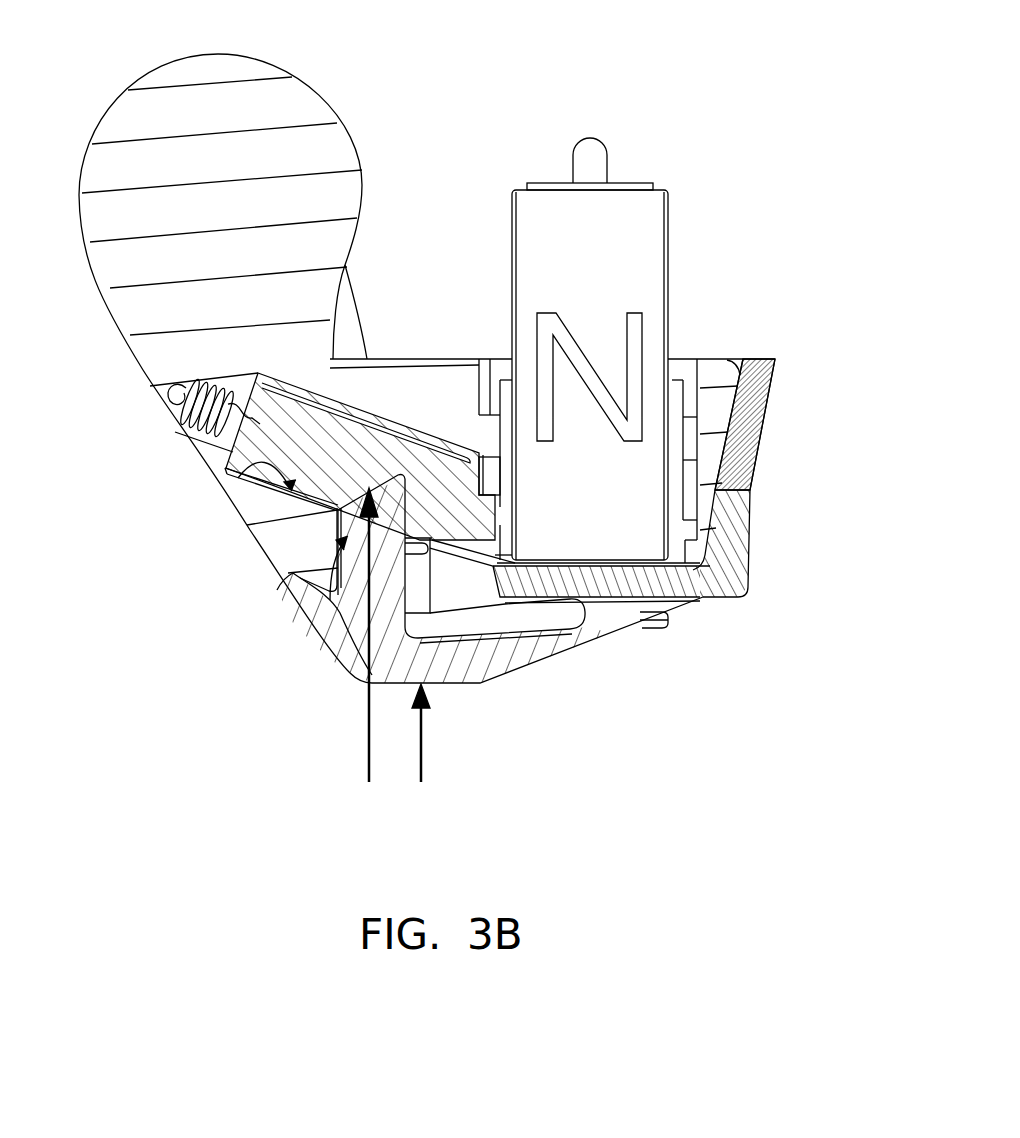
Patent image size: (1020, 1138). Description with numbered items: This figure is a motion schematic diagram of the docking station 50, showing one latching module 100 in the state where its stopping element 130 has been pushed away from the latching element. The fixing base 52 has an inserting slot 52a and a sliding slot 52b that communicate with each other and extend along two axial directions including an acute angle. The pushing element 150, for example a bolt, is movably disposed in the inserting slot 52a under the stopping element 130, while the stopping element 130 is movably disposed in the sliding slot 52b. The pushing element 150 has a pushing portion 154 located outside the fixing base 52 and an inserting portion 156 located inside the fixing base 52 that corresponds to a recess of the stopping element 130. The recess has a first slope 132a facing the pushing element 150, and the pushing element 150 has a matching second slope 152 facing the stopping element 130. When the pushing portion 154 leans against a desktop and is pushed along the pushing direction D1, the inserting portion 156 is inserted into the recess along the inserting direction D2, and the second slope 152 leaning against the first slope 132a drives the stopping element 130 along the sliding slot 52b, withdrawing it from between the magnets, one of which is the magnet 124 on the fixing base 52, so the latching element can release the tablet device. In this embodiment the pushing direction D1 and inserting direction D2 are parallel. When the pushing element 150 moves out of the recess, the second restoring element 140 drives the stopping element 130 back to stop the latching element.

The latching module 100 is at (648, 77).
The docking station 50 is at (118, 448).
The fixing base 52 is at (145, 297).
The inserting slot 52a is at (340, 600).
The sliding slot 52b is at (250, 500).
The magnet 124 is at (640, 252).
The stopping element 130 is at (390, 455).
The first slope 132a is at (406, 490).
The second restoring element 140 is at (202, 442).
The pushing element 150 is at (543, 674).
The second slope 152 is at (300, 510).
The pushing portion 154 is at (494, 657).
The inserting portion 156 is at (355, 633).
The pushing direction D1 is at (438, 748).
The inserting direction D2 is at (353, 650).